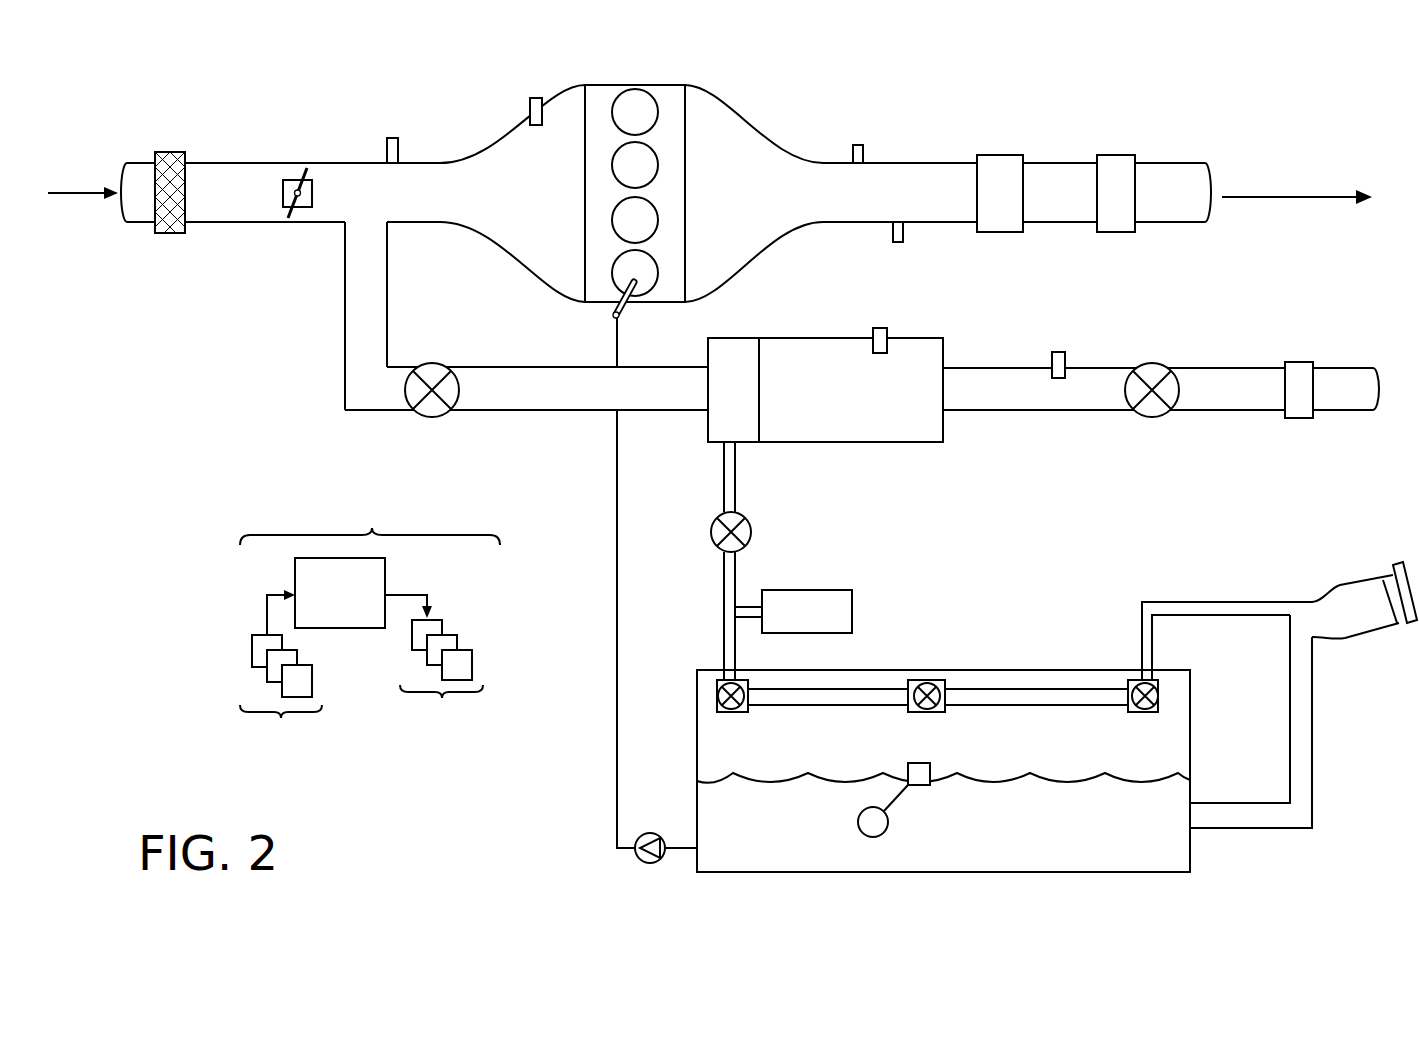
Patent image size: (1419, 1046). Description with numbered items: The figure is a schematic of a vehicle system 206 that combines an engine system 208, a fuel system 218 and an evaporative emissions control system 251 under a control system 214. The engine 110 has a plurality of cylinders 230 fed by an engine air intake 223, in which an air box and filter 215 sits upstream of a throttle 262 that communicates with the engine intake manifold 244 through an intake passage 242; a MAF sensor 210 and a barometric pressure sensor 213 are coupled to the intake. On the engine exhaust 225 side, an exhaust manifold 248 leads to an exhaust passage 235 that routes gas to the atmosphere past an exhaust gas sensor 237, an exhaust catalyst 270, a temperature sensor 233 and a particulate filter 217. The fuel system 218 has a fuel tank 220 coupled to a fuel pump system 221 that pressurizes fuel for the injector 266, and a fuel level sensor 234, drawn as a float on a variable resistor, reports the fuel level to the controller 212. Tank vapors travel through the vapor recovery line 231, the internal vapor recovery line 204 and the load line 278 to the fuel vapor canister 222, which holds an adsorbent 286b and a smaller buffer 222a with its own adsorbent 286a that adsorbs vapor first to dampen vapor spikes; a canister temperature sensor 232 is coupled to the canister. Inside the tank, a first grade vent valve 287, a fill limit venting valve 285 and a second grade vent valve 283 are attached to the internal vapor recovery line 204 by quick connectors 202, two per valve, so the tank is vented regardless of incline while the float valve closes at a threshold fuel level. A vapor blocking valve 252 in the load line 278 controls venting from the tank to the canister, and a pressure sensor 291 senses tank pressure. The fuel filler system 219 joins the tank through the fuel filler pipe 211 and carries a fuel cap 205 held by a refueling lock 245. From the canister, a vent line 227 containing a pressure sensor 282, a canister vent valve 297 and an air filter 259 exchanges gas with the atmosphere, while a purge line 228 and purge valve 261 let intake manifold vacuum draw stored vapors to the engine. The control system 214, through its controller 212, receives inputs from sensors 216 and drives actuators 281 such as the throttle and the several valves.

The engine 110 is at (685, 175).
The quick connectors 202 is at (717, 685).
The internal vapor recovery line 204 is at (1055, 710).
The fuel cap 205 is at (1399, 560).
The vehicle system 206 is at (143, 86).
The engine system 208 is at (1003, 80).
The MAF sensor 210 is at (391, 138).
The fuel filler pipe 211 is at (1312, 718).
The controller 212 is at (349, 596).
The barometric pressure sensor 213 is at (536, 98).
The control system 214 is at (370, 514).
The air box and filter 215 is at (170, 152).
The sensors 216 is at (281, 697).
The particulate filter 217 is at (1131, 205).
The fuel system 218 is at (1335, 793).
The fuel filler system 219 is at (1365, 560).
The fuel tank 220 is at (1190, 775).
The fuel pump system 221 is at (645, 838).
The fuel vapor canister 222 is at (945, 362).
The buffer 222a is at (732, 340).
The engine air intake 223 is at (350, 88).
The engine exhaust 225 is at (884, 62).
The vent line 227 is at (1043, 398).
The purge line 228 is at (554, 400).
The cylinders 230 is at (658, 106).
The vapor recovery line 231 is at (1210, 602).
The canister temperature sensor 232 is at (880, 328).
The temperature sensor 233 is at (893, 234).
The fuel level sensor 234 is at (918, 763).
The exhaust passage 235 is at (1193, 163).
The exhaust gas sensor 237 is at (853, 153).
The intake passage 242 is at (333, 230).
The engine intake manifold 244 is at (546, 203).
The refueling lock 245 is at (1398, 627).
The exhaust manifold 248 is at (774, 203).
The emissions control system 251 is at (1368, 315).
The vapor blocking valve 252 is at (717, 545).
The air filter 259 is at (1305, 362).
The purge valve 261 is at (430, 363).
The throttle 262 is at (312, 197).
The injector 266 is at (622, 307).
The exhaust catalyst 270 is at (995, 155).
The load line 278 is at (723, 477).
The actuators 281 is at (441, 681).
The pressure sensor 282 is at (1058, 352).
The second grade vent valve 283 is at (1160, 695).
The fill limit venting valve 285 is at (928, 683).
The buffer adsorbent 286a is at (753, 396).
The adsorbent 286b is at (822, 435).
The first grade vent valve 287 is at (725, 712).
The pressure sensor 291 is at (852, 600).
The canister vent valve 297 is at (1152, 363).